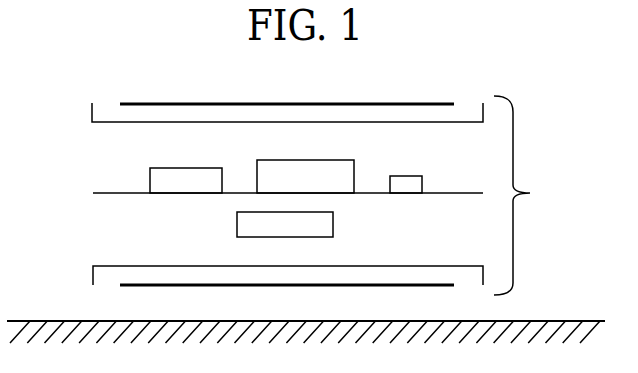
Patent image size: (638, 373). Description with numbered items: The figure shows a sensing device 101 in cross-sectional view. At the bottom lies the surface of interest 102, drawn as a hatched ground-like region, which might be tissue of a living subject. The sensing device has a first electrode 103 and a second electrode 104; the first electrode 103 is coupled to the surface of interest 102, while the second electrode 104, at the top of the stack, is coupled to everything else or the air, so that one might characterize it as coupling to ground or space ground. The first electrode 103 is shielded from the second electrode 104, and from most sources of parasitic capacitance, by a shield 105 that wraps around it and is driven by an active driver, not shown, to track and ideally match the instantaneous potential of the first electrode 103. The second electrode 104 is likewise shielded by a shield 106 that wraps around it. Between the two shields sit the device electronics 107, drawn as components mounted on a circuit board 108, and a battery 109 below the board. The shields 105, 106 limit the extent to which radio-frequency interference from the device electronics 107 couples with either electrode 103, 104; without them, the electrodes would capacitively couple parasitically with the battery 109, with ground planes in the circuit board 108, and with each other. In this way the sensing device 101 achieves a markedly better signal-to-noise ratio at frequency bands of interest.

The sensing device 101 is at (530, 193).
The surface of interest 102 is at (523, 320).
The first electrode 103 is at (313, 287).
The second electrode 104 is at (312, 103).
The shield 105 is at (92, 281).
The shield 106 is at (92, 117).
The device electronics 107 is at (408, 176).
The circuit board 108 is at (125, 193).
The battery 109 is at (237, 229).